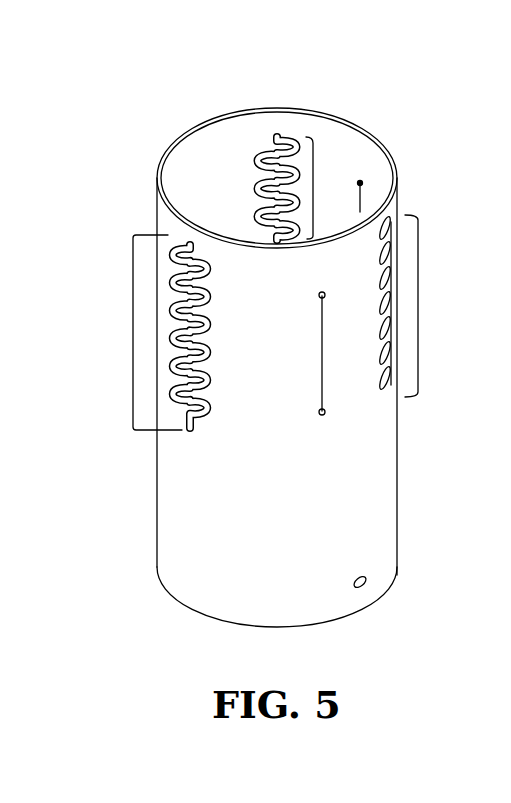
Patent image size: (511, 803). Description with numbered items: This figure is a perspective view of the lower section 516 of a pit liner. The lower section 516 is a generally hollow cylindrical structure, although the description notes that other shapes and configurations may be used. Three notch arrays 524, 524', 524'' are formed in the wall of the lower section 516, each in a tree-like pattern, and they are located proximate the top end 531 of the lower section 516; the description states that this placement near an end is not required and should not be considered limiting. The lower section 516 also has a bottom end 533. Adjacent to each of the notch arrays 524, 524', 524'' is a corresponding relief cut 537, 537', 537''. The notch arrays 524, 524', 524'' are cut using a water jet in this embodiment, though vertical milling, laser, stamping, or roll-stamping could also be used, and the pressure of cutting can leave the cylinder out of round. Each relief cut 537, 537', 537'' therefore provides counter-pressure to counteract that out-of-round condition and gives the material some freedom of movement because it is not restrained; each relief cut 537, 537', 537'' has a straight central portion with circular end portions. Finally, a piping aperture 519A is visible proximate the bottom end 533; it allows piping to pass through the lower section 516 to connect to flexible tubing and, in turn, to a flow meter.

The lower section 516 is at (133, 570).
The top end 531 is at (163, 150).
The bottom end 533 is at (320, 625).
The notch array 524 is at (141, 332).
The notch array 524' is at (315, 147).
The notch array 524'' is at (428, 306).
The relief cut 537 is at (386, 151).
The relief cut 537' is at (285, 363).
The relief cut 537'' is at (199, 127).
The piping aperture 519A is at (370, 580).